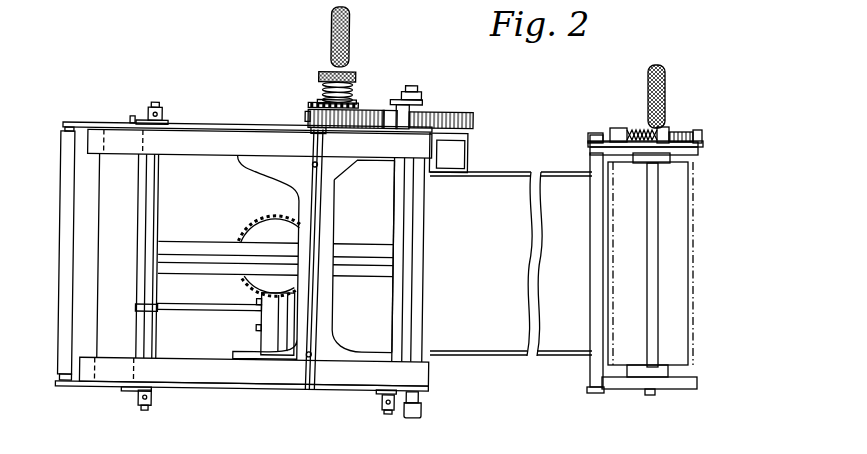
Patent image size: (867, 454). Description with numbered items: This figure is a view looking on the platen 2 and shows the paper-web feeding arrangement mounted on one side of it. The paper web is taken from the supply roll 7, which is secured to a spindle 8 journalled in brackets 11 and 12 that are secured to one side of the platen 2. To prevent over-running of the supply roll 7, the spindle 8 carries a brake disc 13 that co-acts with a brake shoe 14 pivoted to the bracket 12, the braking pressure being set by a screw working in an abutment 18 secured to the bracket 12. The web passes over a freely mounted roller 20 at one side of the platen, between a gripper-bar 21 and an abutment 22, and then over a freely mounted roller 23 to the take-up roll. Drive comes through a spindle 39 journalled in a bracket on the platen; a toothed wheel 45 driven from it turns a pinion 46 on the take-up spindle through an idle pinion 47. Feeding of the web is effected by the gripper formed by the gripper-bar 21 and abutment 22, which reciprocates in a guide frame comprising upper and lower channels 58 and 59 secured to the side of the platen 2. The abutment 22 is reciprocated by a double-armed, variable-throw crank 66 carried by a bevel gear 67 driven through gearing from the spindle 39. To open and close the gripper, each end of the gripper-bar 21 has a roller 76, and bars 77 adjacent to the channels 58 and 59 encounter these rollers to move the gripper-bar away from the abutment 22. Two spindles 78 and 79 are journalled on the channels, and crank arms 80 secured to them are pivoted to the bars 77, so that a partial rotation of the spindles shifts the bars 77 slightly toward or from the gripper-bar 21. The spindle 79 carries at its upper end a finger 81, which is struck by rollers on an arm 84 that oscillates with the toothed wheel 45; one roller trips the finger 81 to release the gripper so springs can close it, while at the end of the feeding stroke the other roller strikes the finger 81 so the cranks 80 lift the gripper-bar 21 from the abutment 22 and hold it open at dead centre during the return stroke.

The platen 2 is at (511, 264).
The supply roll 7 is at (679, 352).
The spindle 8 is at (651, 296).
The bracket 11 is at (637, 380).
The bracket 12 is at (693, 156).
The brake disc 13 is at (680, 136).
The brake shoe 14 is at (615, 130).
The abutment 18 is at (668, 128).
The roller 20 is at (597, 256).
The gripper-bar 21 is at (316, 228).
The abutment 22 is at (303, 197).
The roller 23 is at (66, 362).
The spindle 39 is at (428, 395).
The toothed wheel 45 is at (473, 112).
The pinion 46 is at (303, 110).
The idle pinion 47 is at (383, 128).
The upper channel 58 is at (178, 134).
The lower channel 59 is at (352, 88).
The crank 66 is at (369, 272).
The bevel gear 67 is at (254, 227).
The roller 76 is at (318, 140).
The bar 77 is at (208, 125).
The spindle 78 is at (158, 334).
The spindle 79 is at (398, 318).
The crank arm 80 is at (142, 114).
The finger 81 is at (428, 102).
The arm 84 is at (423, 91).